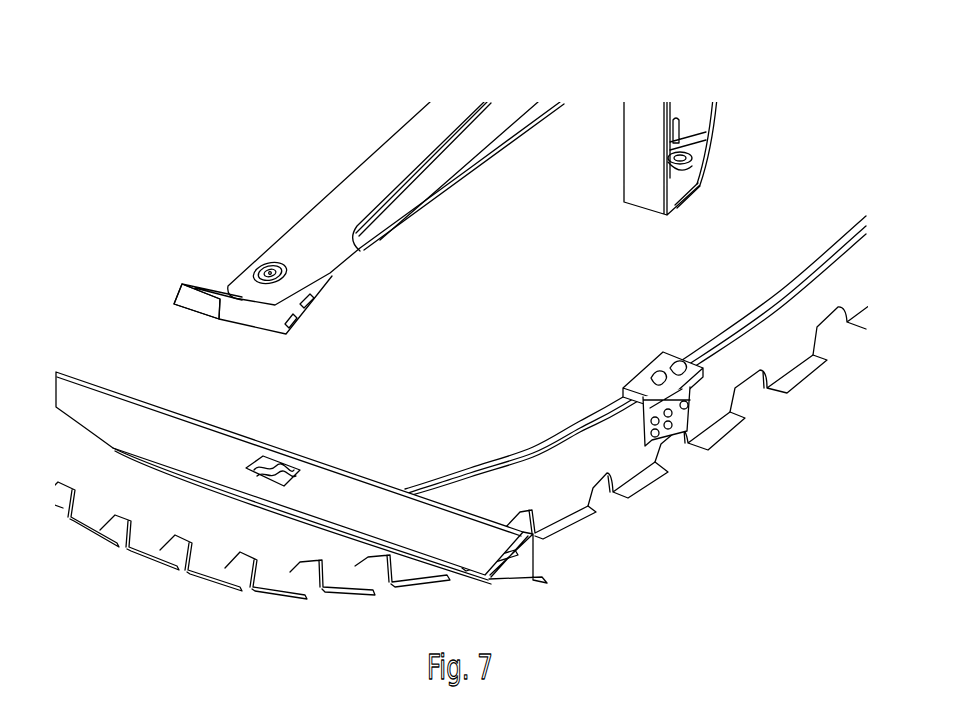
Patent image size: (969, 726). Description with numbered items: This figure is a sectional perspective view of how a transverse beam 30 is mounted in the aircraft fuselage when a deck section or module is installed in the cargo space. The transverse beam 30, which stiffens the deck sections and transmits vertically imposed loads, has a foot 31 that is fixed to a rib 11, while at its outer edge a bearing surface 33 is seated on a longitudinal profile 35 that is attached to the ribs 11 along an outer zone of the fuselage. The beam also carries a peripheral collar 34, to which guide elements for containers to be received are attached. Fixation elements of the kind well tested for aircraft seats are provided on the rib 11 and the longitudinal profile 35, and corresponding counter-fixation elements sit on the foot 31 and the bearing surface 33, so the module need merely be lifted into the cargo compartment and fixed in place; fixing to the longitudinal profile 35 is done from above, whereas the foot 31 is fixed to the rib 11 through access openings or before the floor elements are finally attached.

The ribs 11 is at (573, 489).
The transverse beam 30 is at (449, 206).
The foot 31 is at (646, 196).
The bearing surface 33 is at (310, 311).
The peripheral collar 34 is at (197, 287).
The longitudinal profile 35 is at (458, 522).